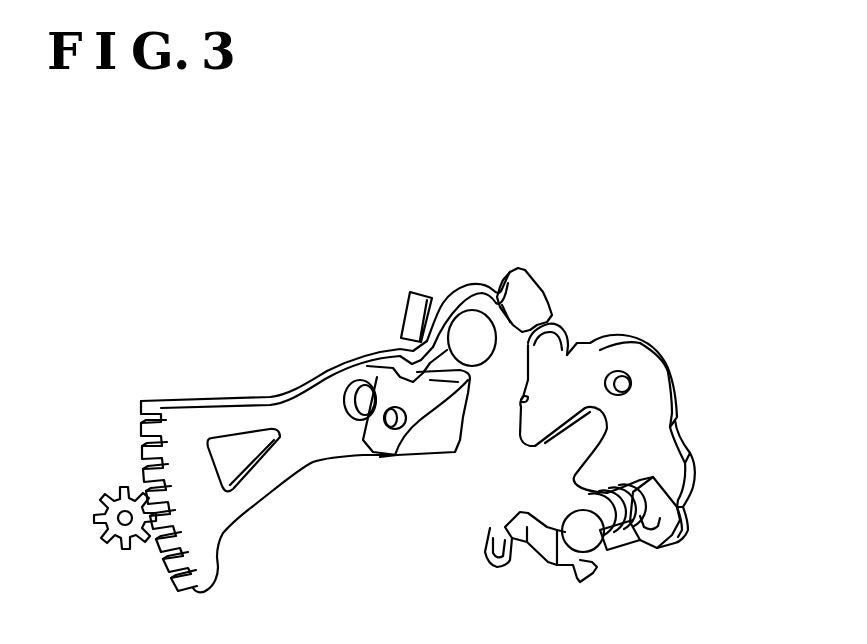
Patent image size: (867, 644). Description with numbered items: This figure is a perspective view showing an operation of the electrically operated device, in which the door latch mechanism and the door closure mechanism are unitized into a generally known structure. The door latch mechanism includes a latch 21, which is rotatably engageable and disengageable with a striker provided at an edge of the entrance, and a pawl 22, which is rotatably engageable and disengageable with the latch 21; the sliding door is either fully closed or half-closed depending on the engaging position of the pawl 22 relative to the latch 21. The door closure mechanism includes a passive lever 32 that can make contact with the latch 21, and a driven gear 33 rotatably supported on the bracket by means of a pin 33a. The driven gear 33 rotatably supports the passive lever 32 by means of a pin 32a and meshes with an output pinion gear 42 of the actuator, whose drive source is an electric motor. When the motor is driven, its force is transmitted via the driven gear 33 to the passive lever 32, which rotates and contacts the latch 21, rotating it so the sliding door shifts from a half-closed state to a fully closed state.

The latch 21 is at (643, 430).
The pawl 22 is at (673, 532).
The passive lever 32 is at (535, 300).
The pin 32a is at (470, 327).
The driven gear 33 is at (296, 408).
The pin 33a is at (362, 393).
The output pinion gear 42 is at (128, 528).